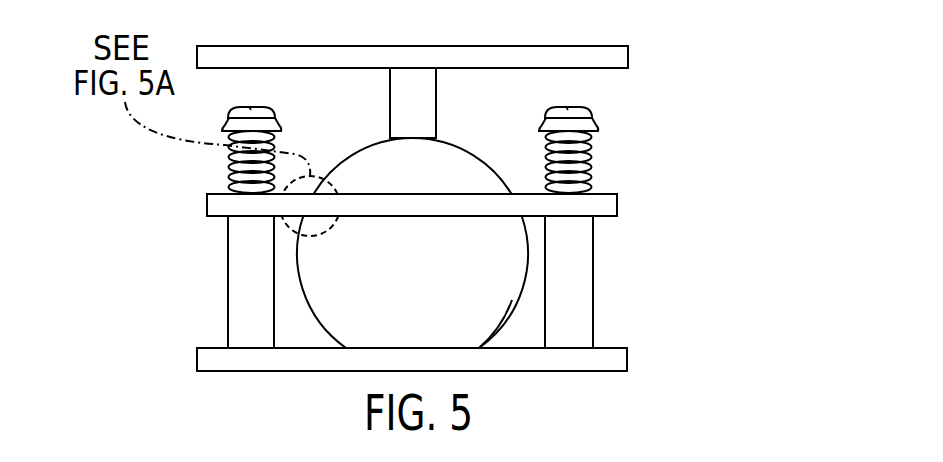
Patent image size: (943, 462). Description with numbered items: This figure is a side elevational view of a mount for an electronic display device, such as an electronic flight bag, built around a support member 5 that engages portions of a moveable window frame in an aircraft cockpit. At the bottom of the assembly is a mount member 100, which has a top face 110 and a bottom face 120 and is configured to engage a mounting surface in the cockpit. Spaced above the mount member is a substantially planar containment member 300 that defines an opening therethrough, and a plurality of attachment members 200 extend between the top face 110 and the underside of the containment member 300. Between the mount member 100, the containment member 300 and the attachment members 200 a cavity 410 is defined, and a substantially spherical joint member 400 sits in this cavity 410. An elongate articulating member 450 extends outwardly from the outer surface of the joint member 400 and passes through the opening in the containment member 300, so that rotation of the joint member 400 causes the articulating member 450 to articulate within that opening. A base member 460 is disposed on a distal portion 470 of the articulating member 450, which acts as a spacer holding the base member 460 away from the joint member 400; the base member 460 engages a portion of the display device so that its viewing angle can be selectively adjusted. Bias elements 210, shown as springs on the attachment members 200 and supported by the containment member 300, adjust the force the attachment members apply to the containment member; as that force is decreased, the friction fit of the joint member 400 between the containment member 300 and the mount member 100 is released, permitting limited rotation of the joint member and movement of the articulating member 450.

The support member 5 is at (150, 232).
The mount member 100 is at (627, 358).
The top face 110 is at (612, 348).
The bottom face 120 is at (615, 372).
The attachment members 200 is at (227, 282).
The bias elements 210 is at (595, 148).
The containment member 300 is at (607, 192).
The joint member 400 is at (327, 283).
The cavity 410 is at (528, 325).
The elongate articulating member 450 is at (436, 112).
The base member 460 is at (628, 56).
The distal portion 470 is at (436, 70).